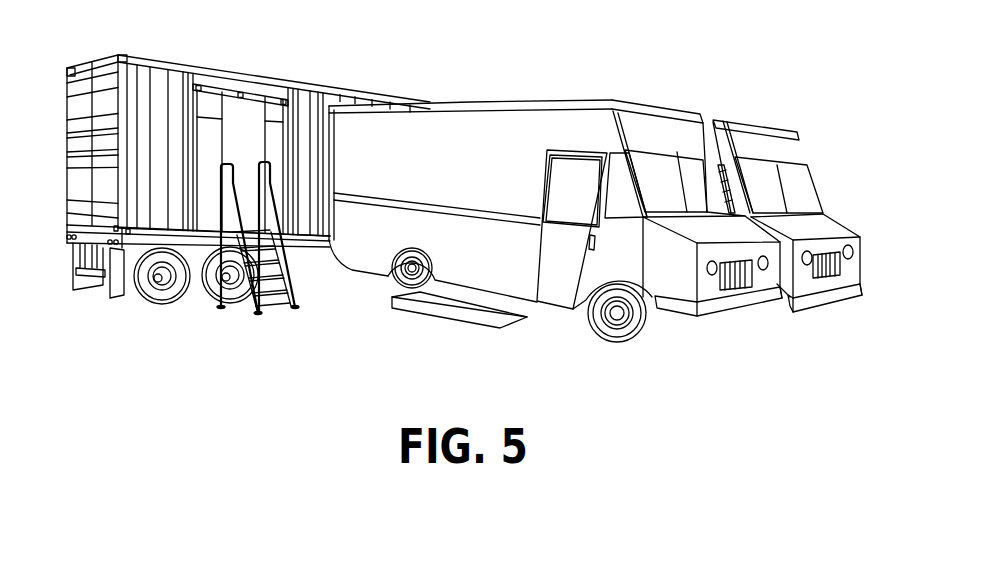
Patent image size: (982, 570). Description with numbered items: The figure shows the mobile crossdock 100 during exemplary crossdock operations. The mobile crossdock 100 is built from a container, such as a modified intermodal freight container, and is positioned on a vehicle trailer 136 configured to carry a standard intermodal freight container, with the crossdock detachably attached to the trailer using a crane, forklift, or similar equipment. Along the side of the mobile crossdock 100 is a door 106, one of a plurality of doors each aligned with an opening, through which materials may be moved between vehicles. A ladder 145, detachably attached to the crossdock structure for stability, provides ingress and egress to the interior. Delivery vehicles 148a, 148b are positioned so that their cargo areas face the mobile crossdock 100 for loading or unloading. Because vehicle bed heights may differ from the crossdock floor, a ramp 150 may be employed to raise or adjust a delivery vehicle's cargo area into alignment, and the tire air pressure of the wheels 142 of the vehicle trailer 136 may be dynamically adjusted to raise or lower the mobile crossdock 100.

The mobile crossdock 100 is at (200, 63).
The door 106 is at (255, 98).
The vehicle trailer 136 is at (328, 248).
The wheels 142 is at (163, 313).
The ladder 145 is at (273, 301).
The delivery vehicle 148a is at (573, 98).
The delivery vehicle 148b is at (758, 122).
The ramp 150 is at (472, 322).